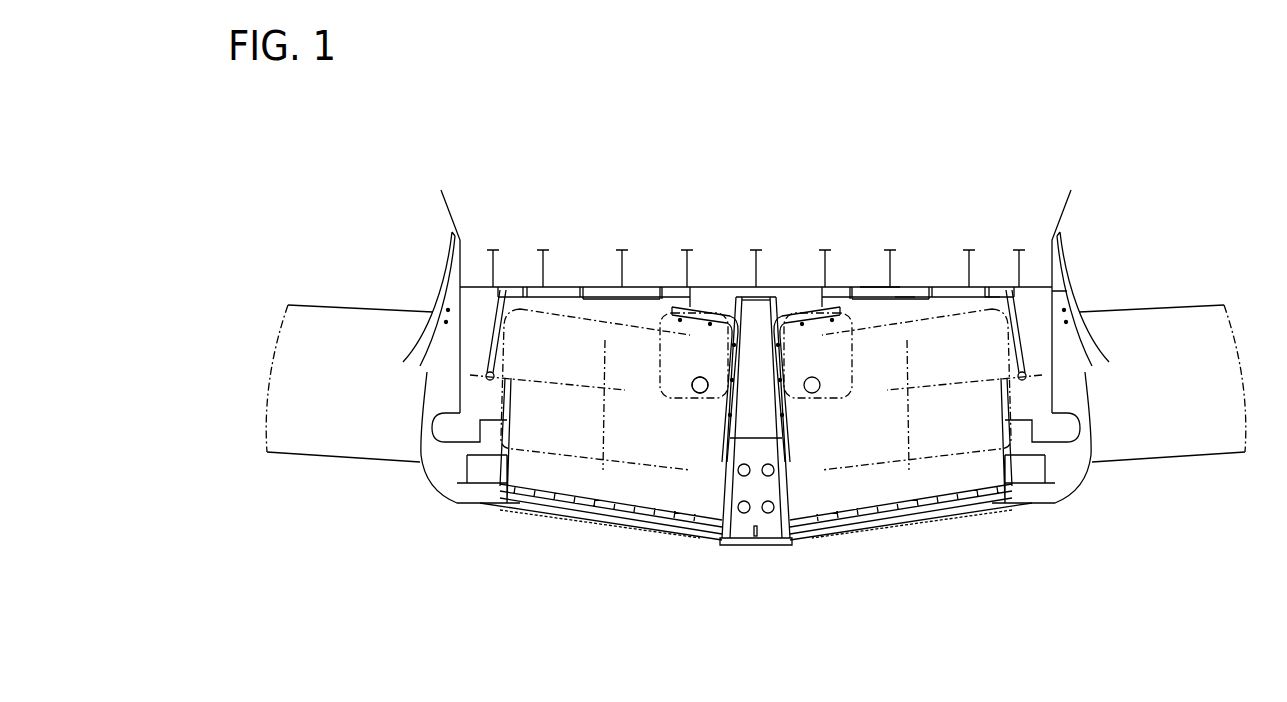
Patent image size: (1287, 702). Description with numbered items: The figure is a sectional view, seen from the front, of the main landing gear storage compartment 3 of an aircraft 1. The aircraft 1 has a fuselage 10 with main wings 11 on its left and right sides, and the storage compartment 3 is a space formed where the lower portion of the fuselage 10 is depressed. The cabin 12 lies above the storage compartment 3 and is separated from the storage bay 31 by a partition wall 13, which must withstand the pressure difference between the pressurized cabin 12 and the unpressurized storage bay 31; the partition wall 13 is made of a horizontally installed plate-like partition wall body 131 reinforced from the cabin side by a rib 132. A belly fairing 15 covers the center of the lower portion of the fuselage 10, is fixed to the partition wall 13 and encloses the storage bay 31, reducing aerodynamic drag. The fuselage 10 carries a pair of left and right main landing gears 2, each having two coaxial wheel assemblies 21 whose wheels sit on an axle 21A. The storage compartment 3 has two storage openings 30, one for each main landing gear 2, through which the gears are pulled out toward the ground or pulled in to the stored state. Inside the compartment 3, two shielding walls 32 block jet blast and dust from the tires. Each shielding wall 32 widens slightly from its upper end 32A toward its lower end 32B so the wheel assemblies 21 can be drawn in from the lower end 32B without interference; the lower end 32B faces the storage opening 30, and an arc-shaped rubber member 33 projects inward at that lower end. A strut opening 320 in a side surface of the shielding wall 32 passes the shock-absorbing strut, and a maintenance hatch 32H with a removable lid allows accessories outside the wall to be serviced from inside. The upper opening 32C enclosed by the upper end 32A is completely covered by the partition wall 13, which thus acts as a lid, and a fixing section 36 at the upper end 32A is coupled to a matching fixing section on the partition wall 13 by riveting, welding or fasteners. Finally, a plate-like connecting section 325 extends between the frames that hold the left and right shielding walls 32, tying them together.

The aircraft 1 is at (1112, 208).
The fuselage 10 is at (1082, 187).
The main wings 11 is at (300, 306).
The cabin 12 is at (792, 134).
The partition wall 13 is at (873, 290).
The partition wall body 131 is at (905, 305).
The rib 132 is at (993, 305).
The fairing 15 is at (1075, 283).
The main landing gear 2 is at (645, 316).
The wheel assembly 21 is at (577, 307).
The axle 21A is at (605, 432).
The main landing gear storage compartment 3 is at (737, 310).
The storage opening 30 is at (440, 462).
The storage bay 31 is at (762, 404).
The shielding wall 32 is at (1022, 330).
The upper end 32A is at (708, 307).
The lower end 32B is at (712, 530).
The upper opening 32C is at (528, 290).
The maintenance hatch 32H is at (698, 393).
The strut opening 320 is at (458, 403).
The connecting section 325 is at (772, 532).
The rubber member 33 is at (645, 505).
The fixing section 36 is at (552, 290).